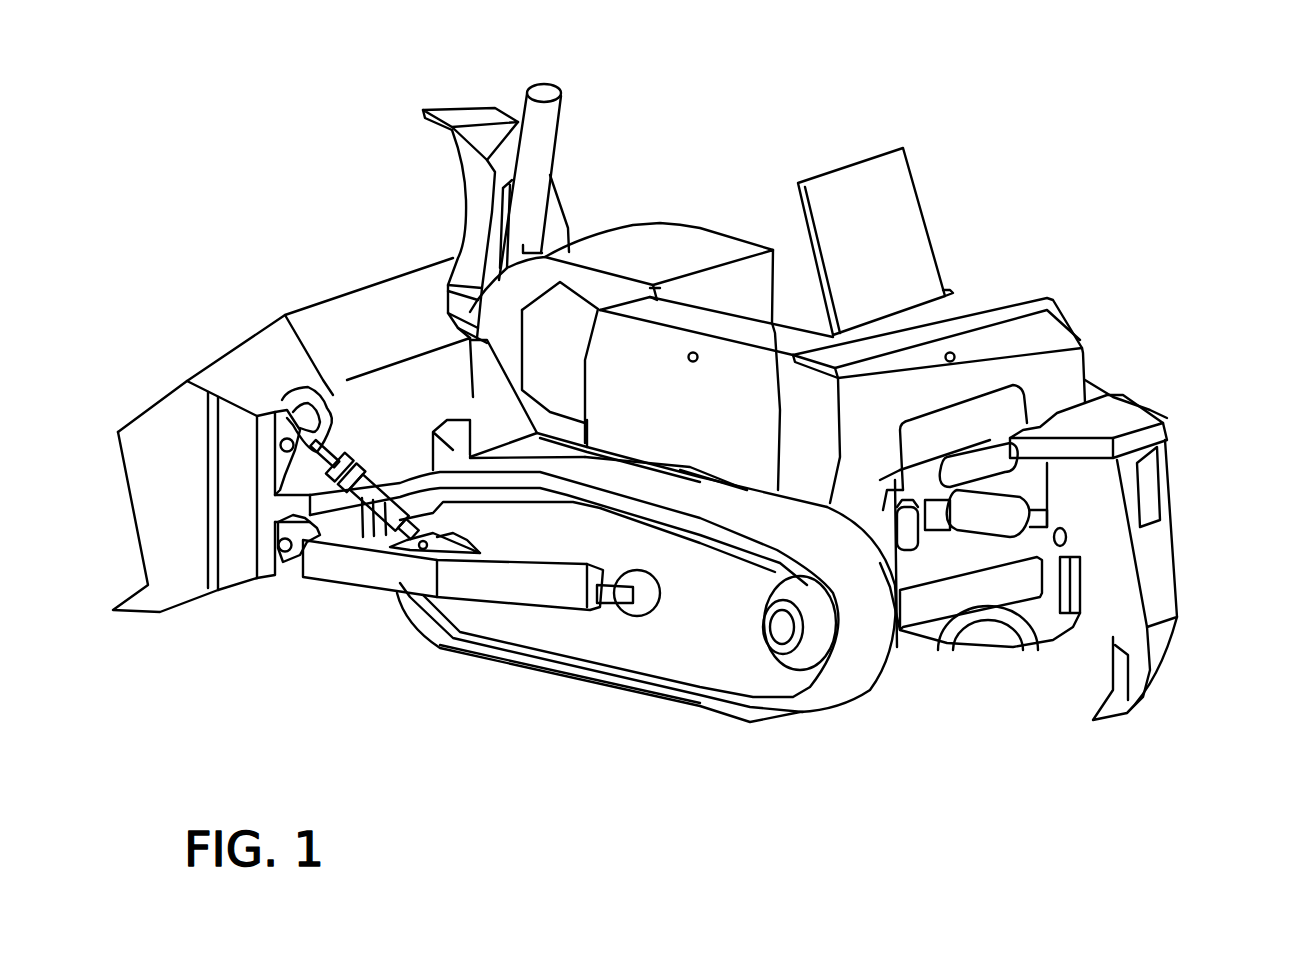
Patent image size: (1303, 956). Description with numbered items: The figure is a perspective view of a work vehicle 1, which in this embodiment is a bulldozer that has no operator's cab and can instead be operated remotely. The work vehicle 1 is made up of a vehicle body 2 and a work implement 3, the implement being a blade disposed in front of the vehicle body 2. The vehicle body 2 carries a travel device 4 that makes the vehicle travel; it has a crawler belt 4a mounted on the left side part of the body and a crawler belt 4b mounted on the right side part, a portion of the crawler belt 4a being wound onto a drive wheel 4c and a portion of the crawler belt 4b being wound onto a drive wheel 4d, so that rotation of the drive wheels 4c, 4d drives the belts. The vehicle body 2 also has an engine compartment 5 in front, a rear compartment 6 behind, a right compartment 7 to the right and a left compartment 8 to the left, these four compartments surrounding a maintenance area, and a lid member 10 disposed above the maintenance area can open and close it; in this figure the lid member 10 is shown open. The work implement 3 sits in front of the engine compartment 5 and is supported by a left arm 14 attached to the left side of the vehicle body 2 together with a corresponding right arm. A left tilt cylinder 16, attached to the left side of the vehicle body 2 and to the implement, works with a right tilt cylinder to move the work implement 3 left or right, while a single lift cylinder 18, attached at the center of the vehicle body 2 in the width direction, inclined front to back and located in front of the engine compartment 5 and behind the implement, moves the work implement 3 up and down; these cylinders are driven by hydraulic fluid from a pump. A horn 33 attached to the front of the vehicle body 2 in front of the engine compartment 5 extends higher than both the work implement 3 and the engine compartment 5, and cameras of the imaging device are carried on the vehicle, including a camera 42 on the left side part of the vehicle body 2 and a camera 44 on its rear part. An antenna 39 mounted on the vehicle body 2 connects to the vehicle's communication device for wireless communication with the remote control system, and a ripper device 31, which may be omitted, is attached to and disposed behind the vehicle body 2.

The work vehicle 1 is at (237, 153).
The vehicle body 2 is at (1095, 310).
The work implement 3 is at (210, 347).
The travel device 4 is at (597, 703).
The crawler belt 4a is at (512, 662).
The crawler belt 4b is at (1045, 632).
The drive wheel 4c is at (803, 660).
The drive wheel 4d is at (977, 627).
The engine compartment 5 is at (690, 238).
The rear compartment 6 is at (1017, 300).
The right compartment 7 is at (968, 297).
The left compartment 8 is at (740, 447).
The lid member 10 is at (860, 165).
The left arm 14 is at (473, 582).
The left tilt cylinder 16 is at (377, 495).
The lift cylinder 18 is at (547, 90).
The ripper device 31 is at (1185, 482).
The horn 33 is at (465, 165).
The antenna 39 is at (663, 253).
The camera 42 is at (693, 362).
The camera 44 is at (953, 357).